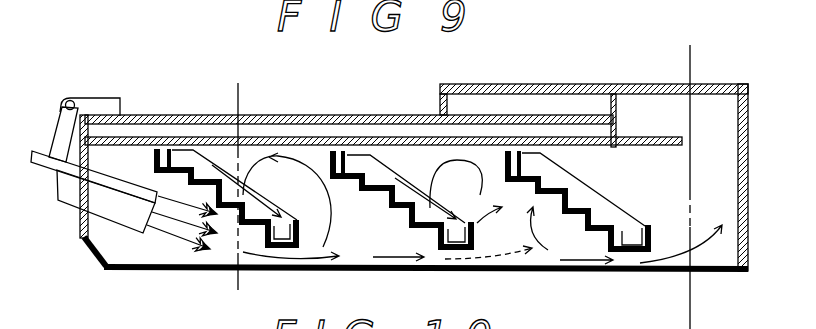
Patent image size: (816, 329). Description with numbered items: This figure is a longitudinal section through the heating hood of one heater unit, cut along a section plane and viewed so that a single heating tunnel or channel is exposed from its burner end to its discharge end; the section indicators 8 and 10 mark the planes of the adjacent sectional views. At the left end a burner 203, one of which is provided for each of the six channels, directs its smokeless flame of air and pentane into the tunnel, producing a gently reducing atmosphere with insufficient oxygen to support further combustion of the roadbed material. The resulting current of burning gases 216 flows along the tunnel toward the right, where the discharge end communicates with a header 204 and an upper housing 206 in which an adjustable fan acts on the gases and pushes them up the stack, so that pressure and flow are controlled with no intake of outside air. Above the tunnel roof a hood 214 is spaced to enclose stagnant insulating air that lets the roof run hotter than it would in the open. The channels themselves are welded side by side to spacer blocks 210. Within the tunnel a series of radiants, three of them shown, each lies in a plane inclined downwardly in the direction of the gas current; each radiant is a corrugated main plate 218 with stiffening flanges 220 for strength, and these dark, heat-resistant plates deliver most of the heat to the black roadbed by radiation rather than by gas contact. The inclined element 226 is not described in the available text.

The section line 8- 8 is at (683, 72).
The section line 10- 10 is at (232, 93).
The burner 203 is at (103, 197).
The header 204 is at (710, 188).
The upper housing 206 is at (633, 105).
The spacer block 210 is at (92, 98).
The hood 214 is at (380, 114).
The current of burning gases 216 is at (192, 230).
The corrugated main plate 218 is at (395, 189).
The stiffening flange 220 is at (395, 192).
The inclined plate 226 is at (548, 158).